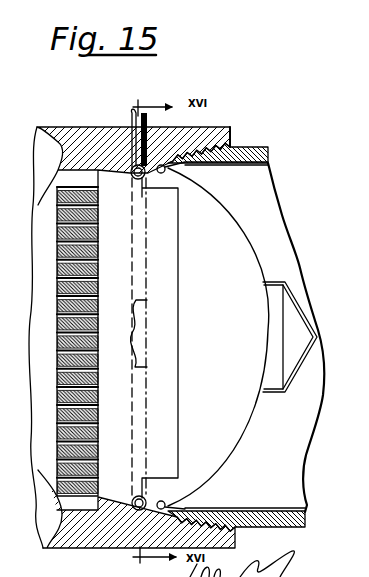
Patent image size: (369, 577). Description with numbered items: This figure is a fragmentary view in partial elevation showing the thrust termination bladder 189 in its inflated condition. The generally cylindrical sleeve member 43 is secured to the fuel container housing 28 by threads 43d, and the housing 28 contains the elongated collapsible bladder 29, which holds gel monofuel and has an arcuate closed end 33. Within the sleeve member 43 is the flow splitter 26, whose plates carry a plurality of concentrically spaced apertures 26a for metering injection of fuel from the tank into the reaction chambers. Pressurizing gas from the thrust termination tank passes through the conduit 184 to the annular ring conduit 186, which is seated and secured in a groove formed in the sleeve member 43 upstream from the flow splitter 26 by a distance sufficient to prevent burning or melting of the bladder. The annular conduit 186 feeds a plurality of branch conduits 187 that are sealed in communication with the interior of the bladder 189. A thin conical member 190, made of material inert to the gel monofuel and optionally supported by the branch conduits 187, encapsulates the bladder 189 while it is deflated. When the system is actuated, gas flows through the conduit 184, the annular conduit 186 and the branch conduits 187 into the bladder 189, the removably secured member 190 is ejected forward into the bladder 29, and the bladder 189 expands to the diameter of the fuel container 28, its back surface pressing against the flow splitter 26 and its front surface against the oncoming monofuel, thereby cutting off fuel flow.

The sleeve member 43 is at (88, 140).
The threads 43d is at (231, 128).
The fuel container housing 28 is at (250, 148).
The conduit 184 is at (132, 112).
The bladder 189 is at (240, 256).
The bladder 29 is at (286, 487).
The conical member 190 is at (296, 300).
The annular ring conduit 186 is at (100, 332).
The branch conduits 187 is at (143, 252).
The flow splitter 26 is at (98, 440).
The apertures 26a is at (98, 451).
The arcuate closed end 33 is at (284, 510).